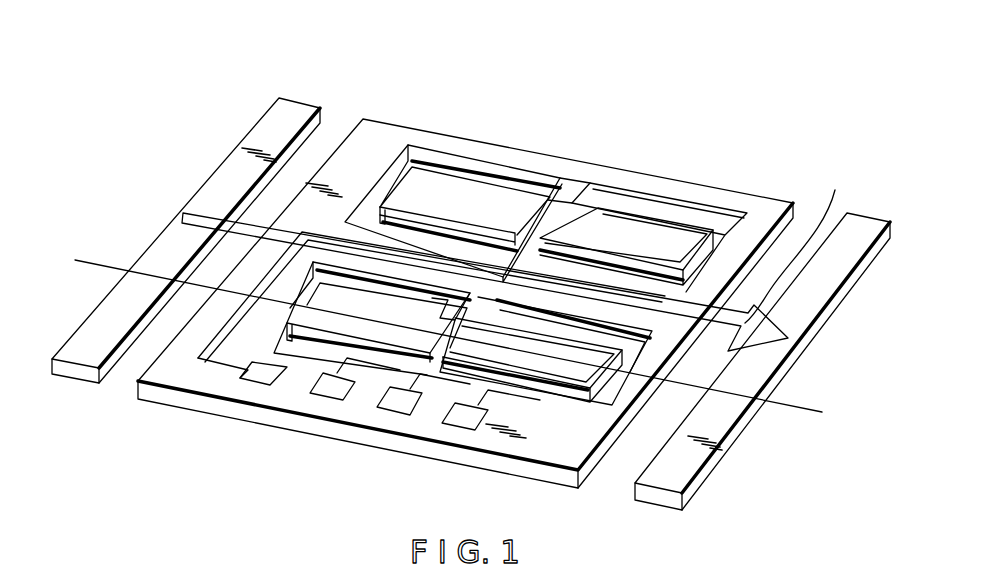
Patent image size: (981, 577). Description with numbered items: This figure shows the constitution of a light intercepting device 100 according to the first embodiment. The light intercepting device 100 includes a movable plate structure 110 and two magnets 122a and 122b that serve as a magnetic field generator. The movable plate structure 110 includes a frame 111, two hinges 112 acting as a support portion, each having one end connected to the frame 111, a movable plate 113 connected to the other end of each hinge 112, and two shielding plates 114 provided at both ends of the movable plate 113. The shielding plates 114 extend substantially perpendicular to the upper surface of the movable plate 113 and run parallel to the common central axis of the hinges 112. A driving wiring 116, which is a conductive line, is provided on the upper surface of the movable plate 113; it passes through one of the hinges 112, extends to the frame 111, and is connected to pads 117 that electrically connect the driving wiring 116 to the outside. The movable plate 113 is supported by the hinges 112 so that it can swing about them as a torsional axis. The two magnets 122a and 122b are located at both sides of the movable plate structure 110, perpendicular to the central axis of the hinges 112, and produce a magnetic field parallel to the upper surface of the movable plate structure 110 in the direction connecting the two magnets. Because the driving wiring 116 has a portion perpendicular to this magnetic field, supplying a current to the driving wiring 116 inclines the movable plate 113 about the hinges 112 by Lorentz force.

The light intercepting device 100 is at (331, 68).
The movable plate structure 110 is at (418, 116).
The frame 111 is at (478, 148).
The hinges 112 is at (573, 183).
The movable plate 113 is at (598, 225).
The shielding plates 114 is at (724, 228).
The driving wiring 116 is at (333, 330).
The pads 117 is at (330, 387).
The magnet 122a is at (150, 255).
The magnet 122b is at (693, 457).